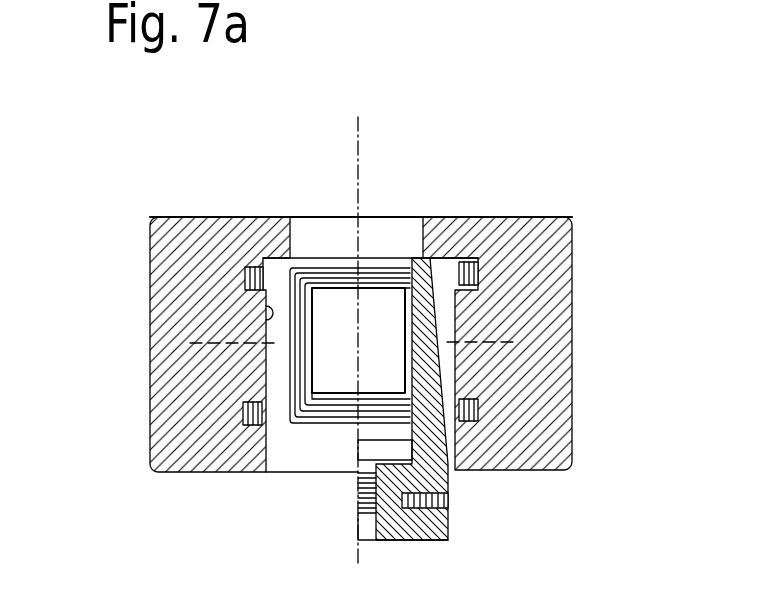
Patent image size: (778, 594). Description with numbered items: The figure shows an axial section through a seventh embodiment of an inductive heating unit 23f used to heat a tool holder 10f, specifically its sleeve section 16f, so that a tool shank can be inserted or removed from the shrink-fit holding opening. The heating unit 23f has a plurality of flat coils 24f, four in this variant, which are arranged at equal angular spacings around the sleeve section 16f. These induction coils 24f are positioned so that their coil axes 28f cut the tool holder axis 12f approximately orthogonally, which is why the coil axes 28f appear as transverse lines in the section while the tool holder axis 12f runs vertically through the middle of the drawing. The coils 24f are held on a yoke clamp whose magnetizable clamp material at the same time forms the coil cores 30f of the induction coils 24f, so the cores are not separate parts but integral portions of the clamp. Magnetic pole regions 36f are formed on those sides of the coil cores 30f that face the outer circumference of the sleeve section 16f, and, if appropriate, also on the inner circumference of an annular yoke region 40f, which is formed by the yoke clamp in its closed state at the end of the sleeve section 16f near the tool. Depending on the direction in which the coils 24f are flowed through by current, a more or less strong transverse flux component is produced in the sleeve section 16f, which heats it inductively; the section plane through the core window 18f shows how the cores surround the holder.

The tool holder 10f is at (455, 516).
The tool holder axis 12f is at (360, 130).
The sleeve section 16f is at (437, 388).
The core / armature opening 18f is at (402, 310).
The heating unit 23f is at (585, 288).
The flat coils 24f is at (480, 268).
The coil axes 28f is at (515, 342).
The coil cores 30f is at (332, 308).
The magnetic pole regions 36f is at (452, 257).
The annular yoke region 40f is at (273, 245).